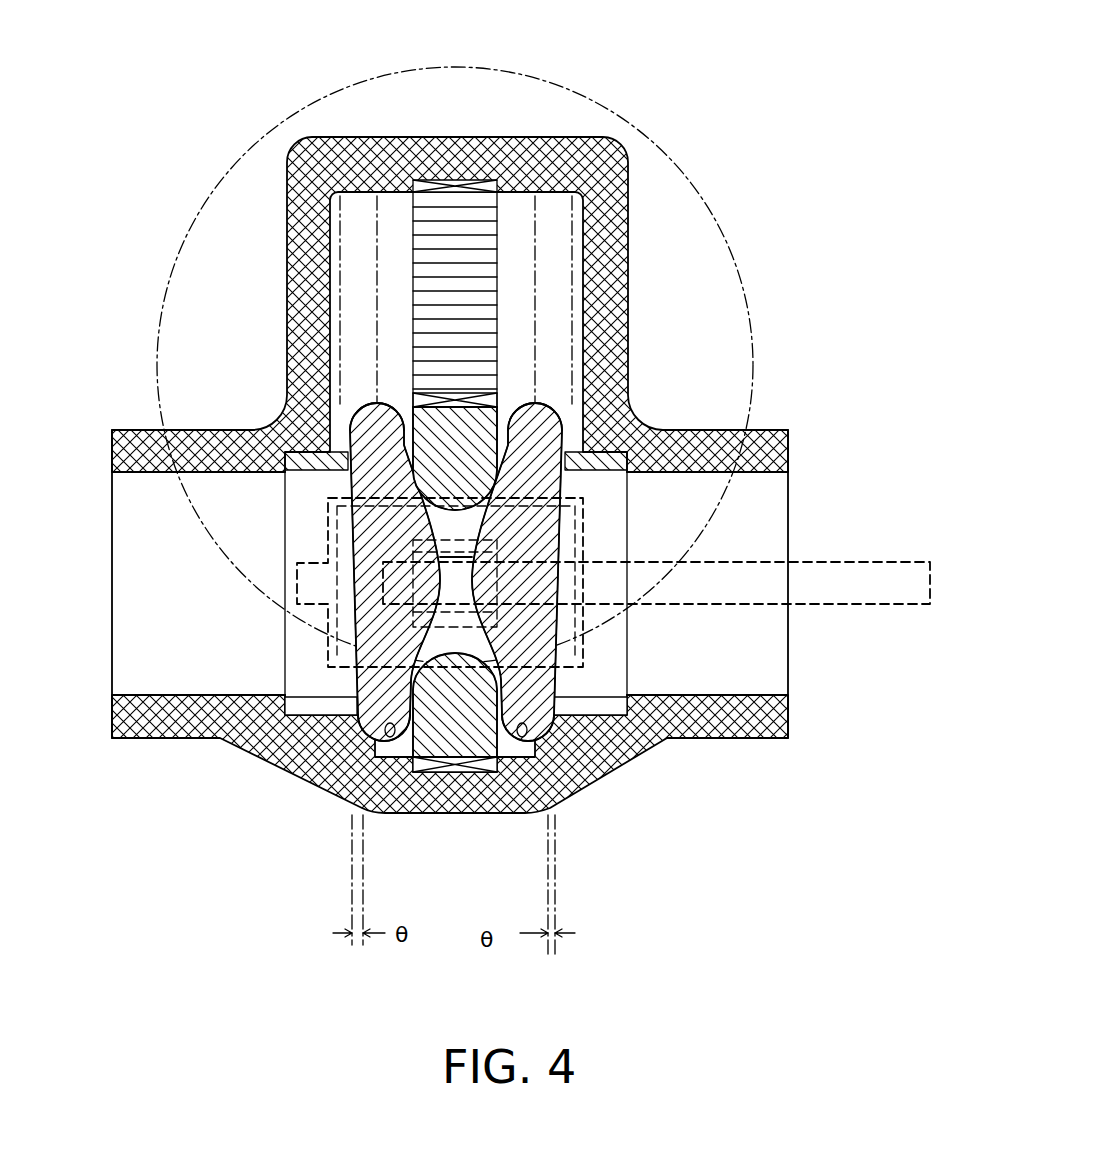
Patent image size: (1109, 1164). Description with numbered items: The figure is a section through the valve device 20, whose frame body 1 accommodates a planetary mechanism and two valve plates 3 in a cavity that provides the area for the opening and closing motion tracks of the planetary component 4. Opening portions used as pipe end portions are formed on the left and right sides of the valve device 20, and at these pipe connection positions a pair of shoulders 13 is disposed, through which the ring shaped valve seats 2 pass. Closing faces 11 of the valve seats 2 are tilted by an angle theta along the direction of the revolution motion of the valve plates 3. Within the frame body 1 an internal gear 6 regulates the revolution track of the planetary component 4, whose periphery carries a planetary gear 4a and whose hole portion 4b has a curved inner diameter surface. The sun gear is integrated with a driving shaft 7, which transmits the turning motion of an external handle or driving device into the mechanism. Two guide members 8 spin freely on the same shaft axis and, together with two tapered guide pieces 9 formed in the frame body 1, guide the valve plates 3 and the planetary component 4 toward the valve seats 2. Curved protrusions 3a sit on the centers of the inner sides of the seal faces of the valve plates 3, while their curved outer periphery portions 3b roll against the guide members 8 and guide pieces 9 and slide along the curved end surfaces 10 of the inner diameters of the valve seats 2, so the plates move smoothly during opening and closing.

The frame body 1 is at (380, 143).
The valve seat 2 is at (280, 765).
The valve plate 3 is at (365, 440).
The curved protrusion 3a is at (352, 437).
The outer periphery portion 3b is at (385, 760).
The planetary component 4 is at (599, 547).
The planetary gear 4a is at (485, 392).
The hole portion 4b is at (467, 795).
The internal gear 6 is at (457, 200).
The driving shaft 7 is at (875, 575).
The guide member 8 is at (267, 745).
The guide piece 9 is at (357, 210).
The end surface of the inner diameter of the valve seat 10 is at (213, 738).
The closing face 11 is at (352, 468).
The shoulder 13 is at (335, 740).
The valve device 20 is at (736, 108).